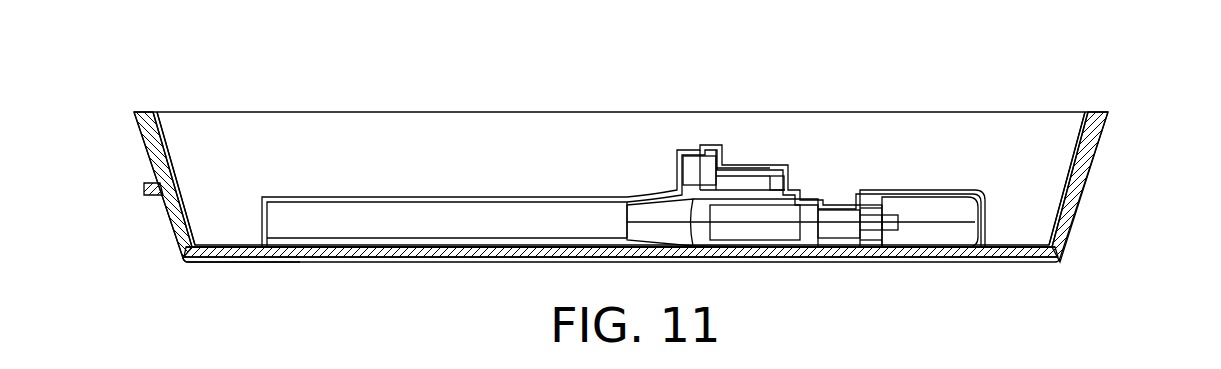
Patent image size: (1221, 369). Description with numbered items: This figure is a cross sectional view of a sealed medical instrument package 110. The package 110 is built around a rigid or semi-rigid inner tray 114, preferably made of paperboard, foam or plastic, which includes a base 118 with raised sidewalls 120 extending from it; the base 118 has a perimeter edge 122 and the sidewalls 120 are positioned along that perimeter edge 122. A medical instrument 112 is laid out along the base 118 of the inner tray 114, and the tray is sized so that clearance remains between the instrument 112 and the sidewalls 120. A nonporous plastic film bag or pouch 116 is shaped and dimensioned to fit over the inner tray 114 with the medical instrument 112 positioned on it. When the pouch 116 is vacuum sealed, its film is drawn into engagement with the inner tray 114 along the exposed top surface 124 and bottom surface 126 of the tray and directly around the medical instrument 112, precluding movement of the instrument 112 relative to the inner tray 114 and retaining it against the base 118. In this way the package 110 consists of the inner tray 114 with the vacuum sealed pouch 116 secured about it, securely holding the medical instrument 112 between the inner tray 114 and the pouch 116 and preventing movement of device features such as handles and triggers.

The package 110 is at (512, 92).
The medical instrument 112 is at (582, 218).
The inner tray 114 is at (163, 138).
The pouch 116 is at (312, 197).
The base 118 is at (296, 264).
The sidewalls 120 is at (1080, 176).
The perimeter edge 122 is at (178, 262).
The top surface 124 is at (1023, 245).
The bottom surface 126 is at (990, 268).